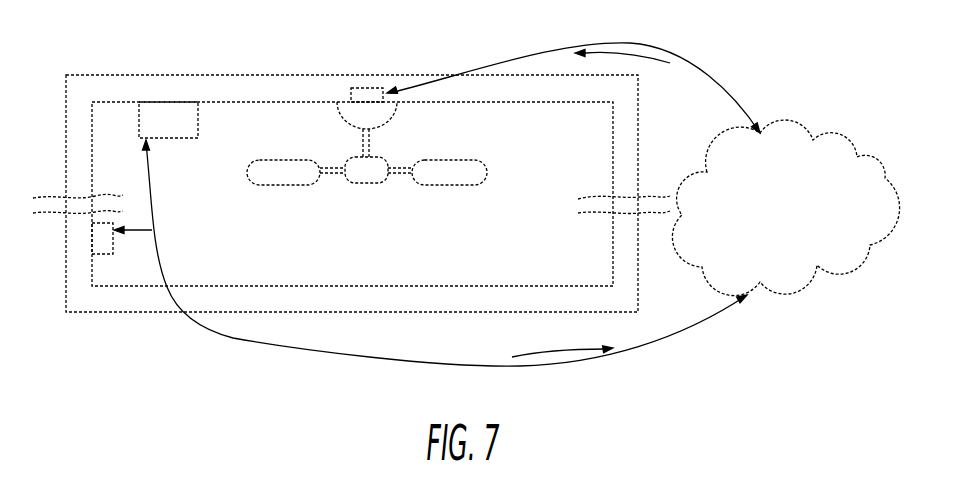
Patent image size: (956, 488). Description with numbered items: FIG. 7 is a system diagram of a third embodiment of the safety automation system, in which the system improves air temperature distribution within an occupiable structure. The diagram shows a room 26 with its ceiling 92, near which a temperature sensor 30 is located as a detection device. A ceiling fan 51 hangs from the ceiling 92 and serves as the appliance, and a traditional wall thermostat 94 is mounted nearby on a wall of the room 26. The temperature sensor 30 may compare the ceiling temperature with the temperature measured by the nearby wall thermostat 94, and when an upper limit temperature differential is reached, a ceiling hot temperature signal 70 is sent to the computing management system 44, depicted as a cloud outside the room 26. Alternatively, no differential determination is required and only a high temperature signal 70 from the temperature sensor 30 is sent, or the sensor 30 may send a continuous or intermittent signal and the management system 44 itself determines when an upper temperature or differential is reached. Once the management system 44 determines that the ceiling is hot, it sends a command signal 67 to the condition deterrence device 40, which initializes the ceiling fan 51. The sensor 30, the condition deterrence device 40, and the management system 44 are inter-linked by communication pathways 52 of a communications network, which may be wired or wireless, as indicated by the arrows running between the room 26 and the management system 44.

The room 26 is at (496, 263).
The temperature sensor 30 is at (165, 138).
The condition deterrence device 40 is at (373, 88).
The computing management system 44 is at (803, 280).
The ceiling fan 51 is at (370, 185).
The communication pathways 52 is at (712, 77).
The command signal 67 is at (628, 53).
The ceiling hot temperature signal 70 is at (548, 352).
The ceiling 92 is at (488, 103).
The wall thermostat 94 is at (118, 247).